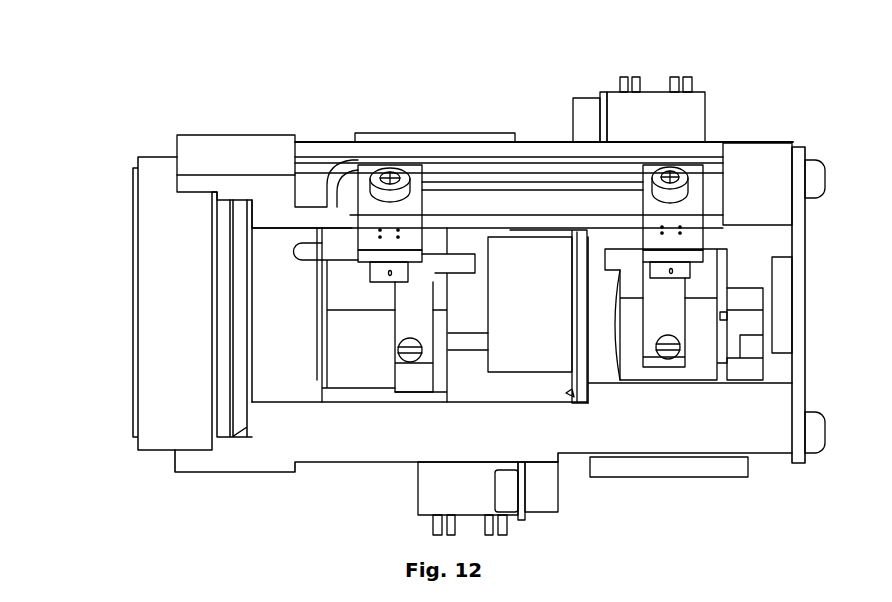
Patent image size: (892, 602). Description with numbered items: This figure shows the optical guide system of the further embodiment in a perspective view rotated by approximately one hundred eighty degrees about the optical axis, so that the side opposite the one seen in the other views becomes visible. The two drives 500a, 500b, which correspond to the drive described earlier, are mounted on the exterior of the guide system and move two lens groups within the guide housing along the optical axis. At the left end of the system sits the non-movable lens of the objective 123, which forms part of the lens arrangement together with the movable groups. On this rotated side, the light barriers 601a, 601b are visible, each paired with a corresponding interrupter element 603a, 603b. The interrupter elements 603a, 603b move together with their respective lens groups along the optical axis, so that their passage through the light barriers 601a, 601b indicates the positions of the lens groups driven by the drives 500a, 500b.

The objective 123 is at (153, 365).
The drive 500a is at (633, 110).
The drive 500b is at (438, 478).
The light barrier 601a is at (690, 208).
The light barrier 601b is at (367, 213).
The interrupter element 603a is at (667, 308).
The interrupter element 603b is at (410, 302).